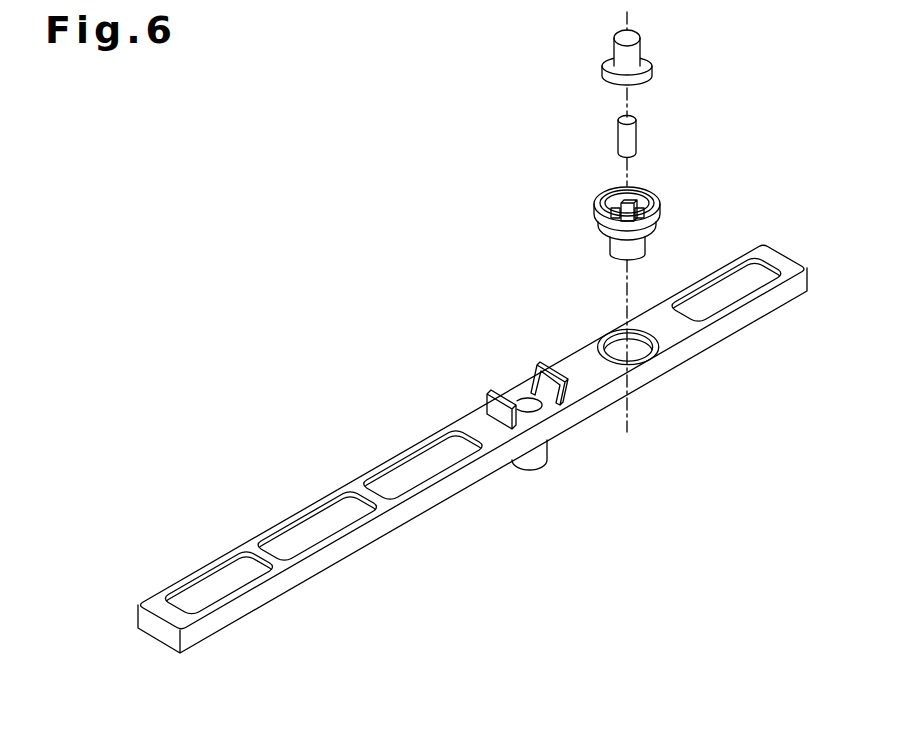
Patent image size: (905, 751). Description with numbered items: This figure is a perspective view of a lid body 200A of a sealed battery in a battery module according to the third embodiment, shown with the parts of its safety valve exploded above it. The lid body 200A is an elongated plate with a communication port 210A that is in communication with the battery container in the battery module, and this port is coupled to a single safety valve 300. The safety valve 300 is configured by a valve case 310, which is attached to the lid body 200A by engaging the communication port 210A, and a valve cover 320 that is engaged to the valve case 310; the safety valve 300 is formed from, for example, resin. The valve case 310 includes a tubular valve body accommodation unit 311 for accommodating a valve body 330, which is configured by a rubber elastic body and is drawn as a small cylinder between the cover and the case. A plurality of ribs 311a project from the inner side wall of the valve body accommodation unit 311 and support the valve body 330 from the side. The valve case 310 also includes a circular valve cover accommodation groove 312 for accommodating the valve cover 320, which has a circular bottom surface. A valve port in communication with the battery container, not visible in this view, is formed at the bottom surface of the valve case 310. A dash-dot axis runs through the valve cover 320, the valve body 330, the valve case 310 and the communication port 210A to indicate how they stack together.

The lid body 200A is at (495, 435).
The communication port 210A is at (650, 366).
The safety valve 300 is at (665, 145).
The valve case 310 is at (629, 195).
The valve body accommodation unit 311 is at (640, 201).
The ribs 311a is at (590, 206).
The valve cover accommodation groove 312 is at (632, 204).
The valve cover 320 is at (652, 70).
The valve body 330 is at (637, 117).